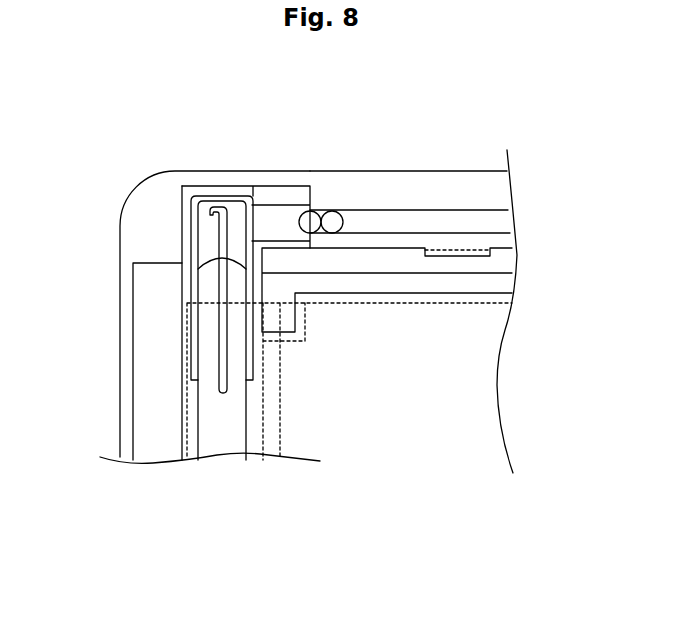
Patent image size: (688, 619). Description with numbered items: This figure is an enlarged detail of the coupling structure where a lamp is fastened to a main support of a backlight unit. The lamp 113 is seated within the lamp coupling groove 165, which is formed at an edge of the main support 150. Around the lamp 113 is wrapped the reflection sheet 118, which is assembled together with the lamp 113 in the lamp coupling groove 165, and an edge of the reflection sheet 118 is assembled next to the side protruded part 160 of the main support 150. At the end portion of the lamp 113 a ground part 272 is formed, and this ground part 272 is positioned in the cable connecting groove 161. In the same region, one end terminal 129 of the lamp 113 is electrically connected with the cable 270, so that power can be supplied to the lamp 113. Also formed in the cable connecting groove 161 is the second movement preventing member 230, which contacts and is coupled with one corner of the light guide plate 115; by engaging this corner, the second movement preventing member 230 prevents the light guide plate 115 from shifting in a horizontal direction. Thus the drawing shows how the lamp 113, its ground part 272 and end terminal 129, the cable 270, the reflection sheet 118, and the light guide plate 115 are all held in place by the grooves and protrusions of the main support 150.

The lamp 113 is at (222, 430).
The light guide plate 115 is at (478, 362).
The reflection sheet 118 is at (187, 308).
The end terminal 129 is at (222, 228).
The main support 150 is at (450, 188).
The side protruded part 160 is at (153, 374).
The cable connecting groove 161 is at (278, 190).
The lamp coupling groove 165 is at (187, 279).
The second movement preventing member 230 is at (283, 295).
The cable 270 is at (484, 222).
The ground part 272 is at (192, 196).